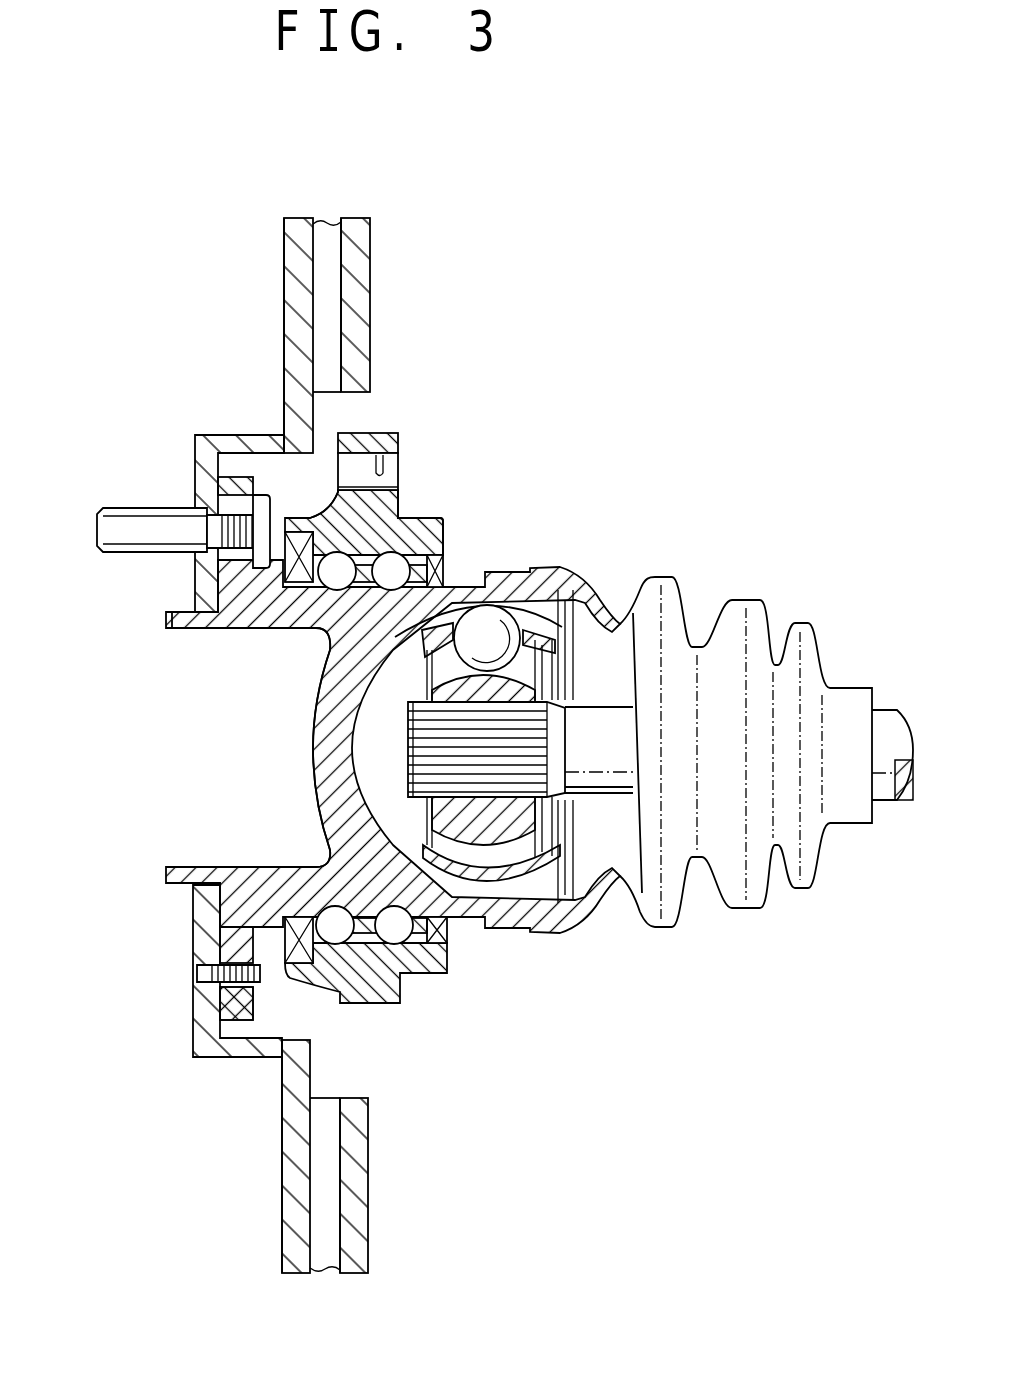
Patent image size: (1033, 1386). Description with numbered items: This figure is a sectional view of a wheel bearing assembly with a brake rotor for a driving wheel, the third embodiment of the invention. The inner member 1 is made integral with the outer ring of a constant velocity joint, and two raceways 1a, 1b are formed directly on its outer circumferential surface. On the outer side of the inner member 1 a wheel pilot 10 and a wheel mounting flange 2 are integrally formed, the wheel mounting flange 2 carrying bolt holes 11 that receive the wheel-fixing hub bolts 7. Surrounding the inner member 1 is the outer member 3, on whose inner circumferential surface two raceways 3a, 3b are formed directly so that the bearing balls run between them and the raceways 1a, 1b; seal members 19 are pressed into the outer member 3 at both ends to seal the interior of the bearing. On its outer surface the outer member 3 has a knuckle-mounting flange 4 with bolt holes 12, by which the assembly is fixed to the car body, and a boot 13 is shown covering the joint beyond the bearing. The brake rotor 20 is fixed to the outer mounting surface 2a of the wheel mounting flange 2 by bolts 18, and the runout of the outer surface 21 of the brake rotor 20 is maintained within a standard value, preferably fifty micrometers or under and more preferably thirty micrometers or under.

The inner member 1 is at (162, 621).
The raceway 1a is at (273, 633).
The raceway 1b is at (310, 685).
The wheel mounting flange 2 is at (250, 1000).
The outer mounting surface 2a is at (200, 1007).
The outer member 3 is at (402, 500).
The raceway 3a is at (325, 523).
The raceway 3b is at (403, 555).
The flange 4 is at (365, 432).
The hub bolt 7 is at (168, 508).
The wheel pilot 10 is at (182, 877).
The bolt hole 11 is at (225, 540).
The bolt hole 12 is at (392, 432).
The boot 13 is at (590, 624).
The bolt 18 is at (200, 969).
The seal member 19 is at (455, 560).
The brake rotor 20 is at (300, 1165).
The outer surface 21 is at (282, 1228).